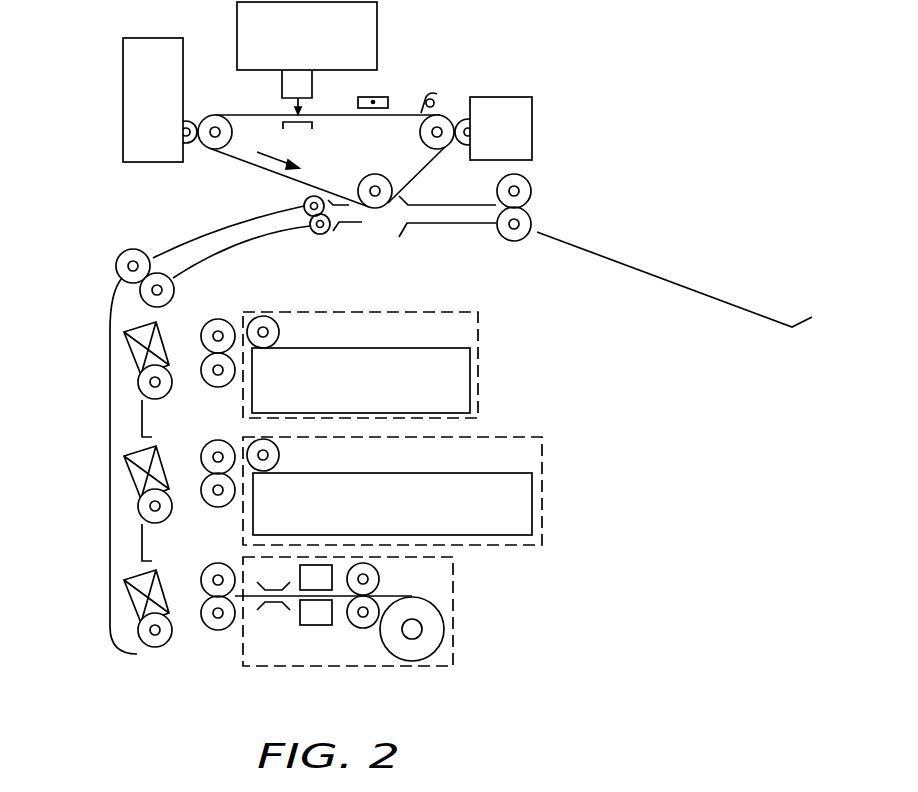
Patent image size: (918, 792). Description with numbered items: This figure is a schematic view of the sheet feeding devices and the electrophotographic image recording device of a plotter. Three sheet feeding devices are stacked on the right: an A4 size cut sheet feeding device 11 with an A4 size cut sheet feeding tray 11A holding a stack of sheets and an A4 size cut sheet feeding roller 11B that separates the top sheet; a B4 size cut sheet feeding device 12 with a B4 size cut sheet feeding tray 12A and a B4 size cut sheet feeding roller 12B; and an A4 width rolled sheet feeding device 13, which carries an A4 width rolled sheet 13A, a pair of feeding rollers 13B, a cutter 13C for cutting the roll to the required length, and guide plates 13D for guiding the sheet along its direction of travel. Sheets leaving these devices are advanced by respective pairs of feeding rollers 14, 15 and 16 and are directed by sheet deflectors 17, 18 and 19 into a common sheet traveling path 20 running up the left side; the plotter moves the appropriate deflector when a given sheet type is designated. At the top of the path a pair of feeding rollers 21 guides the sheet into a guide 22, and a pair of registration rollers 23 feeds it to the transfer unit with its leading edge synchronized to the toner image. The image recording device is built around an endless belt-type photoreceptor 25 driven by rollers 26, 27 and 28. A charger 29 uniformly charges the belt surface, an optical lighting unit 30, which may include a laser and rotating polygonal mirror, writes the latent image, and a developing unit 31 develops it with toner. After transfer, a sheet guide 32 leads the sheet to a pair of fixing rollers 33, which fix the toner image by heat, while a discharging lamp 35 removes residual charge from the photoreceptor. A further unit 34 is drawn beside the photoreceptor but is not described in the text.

The A4 size cut sheet feeding device 11 is at (393, 337).
The A4 size cut sheet feeding tray 11A is at (470, 370).
The A4 size cut sheet feeding roller 11B is at (265, 316).
The B4 size cut sheet feeding device 12 is at (424, 487).
The B4 size cut sheet feeding tray 12A is at (532, 518).
The B4 size cut sheet feeding roller 12B is at (280, 455).
The A4 width rolled sheet feeding device 13 is at (375, 635).
The A4 width rolled sheet 13A is at (444, 632).
The feeding roller 13B is at (360, 628).
The cutter 13C is at (313, 625).
The guide plates 13D is at (277, 603).
The pair of feeding rollers 14 is at (222, 319).
The pair of feeding rollers 15 is at (218, 440).
The pair of feeding rollers 16 is at (220, 563).
The sheet deflector 17 is at (165, 340).
The sheet deflector 18 is at (165, 465).
The sheet deflector 19 is at (166, 590).
The sheet traveling path 20 is at (110, 428).
The pair of feeding rollers 21 is at (122, 252).
The guide 22 is at (175, 243).
The pair of registration rollers 23 is at (327, 232).
The endless belt-type photoreceptor 25 is at (400, 114).
The roller 26 is at (420, 130).
The roller 27 is at (214, 150).
The roller 28 is at (359, 185).
The charger 29 is at (383, 97).
The optical lighting unit 30 is at (237, 23).
The developing unit 31 is at (123, 55).
The sheet guide 32 is at (455, 226).
The pair of fixing rollers 33 is at (531, 186).
The recording unit 34 is at (532, 108).
The discharging lamp 35 is at (437, 94).